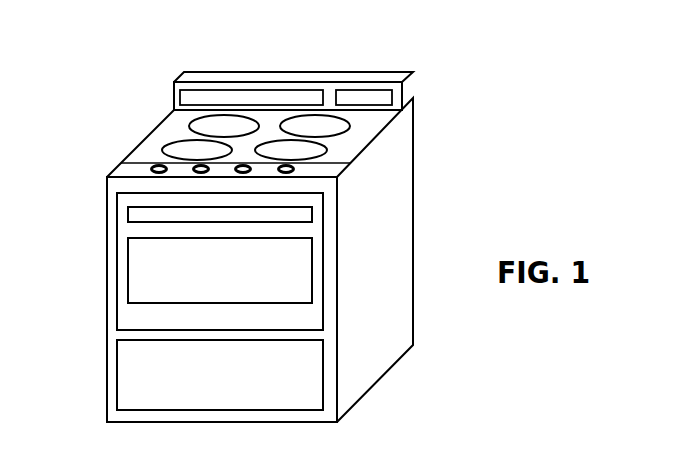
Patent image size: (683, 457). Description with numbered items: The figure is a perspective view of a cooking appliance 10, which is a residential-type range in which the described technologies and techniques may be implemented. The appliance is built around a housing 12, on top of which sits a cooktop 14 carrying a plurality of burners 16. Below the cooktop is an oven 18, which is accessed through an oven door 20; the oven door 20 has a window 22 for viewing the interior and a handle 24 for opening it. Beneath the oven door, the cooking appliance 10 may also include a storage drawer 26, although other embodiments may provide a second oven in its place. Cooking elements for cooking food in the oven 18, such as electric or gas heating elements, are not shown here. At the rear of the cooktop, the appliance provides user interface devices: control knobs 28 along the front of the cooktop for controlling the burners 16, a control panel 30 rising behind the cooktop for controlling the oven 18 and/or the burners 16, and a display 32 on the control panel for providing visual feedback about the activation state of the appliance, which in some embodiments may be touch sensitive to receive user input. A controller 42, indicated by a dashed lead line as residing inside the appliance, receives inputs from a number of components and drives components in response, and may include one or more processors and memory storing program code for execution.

The cooking appliance 10 is at (93, 127).
The housing 12 is at (107, 398).
The cooktop 14 is at (360, 142).
The burners 16 is at (182, 142).
The oven 18 is at (241, 274).
The oven door 20 is at (107, 286).
The window 22 is at (297, 278).
The handle 24 is at (320, 204).
The storage drawer 26 is at (313, 357).
The control knobs 28 is at (158, 164).
The control panel 30 is at (197, 88).
The display 32 is at (362, 91).
The controller 42 is at (409, 90).